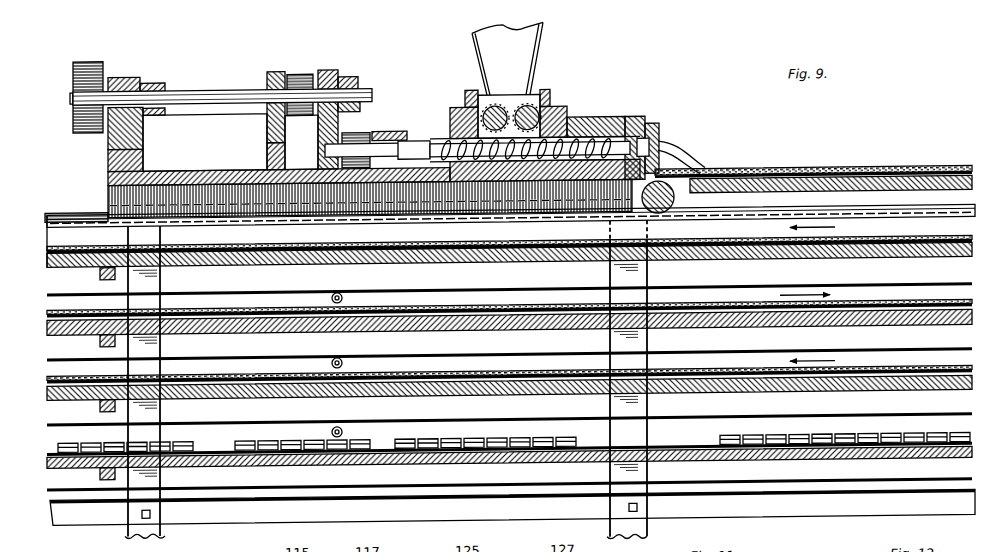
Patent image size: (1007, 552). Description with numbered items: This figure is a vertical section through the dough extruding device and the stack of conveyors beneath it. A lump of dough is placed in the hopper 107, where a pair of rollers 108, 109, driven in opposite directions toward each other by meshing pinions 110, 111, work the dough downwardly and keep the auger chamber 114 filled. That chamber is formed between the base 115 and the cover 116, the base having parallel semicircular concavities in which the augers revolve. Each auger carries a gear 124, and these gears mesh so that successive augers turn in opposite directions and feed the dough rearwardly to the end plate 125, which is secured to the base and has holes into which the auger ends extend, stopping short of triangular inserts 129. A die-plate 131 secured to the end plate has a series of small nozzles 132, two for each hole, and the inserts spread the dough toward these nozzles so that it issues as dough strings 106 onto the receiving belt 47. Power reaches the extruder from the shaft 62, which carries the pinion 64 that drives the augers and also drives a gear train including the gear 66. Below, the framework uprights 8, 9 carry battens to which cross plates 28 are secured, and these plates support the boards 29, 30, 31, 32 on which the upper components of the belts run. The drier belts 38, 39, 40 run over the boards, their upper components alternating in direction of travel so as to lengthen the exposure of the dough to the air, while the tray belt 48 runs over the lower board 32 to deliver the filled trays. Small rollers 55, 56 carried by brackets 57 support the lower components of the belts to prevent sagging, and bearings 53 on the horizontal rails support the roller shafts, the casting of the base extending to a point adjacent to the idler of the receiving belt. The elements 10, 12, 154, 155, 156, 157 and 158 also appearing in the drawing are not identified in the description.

The upright 8 is at (128, 528).
The upright 9 is at (615, 532).
The feed screw 10 is at (380, 140).
The base frame 12 is at (550, 541).
The cross plates 28 is at (98, 268).
The board 29 is at (450, 263).
The board 30 is at (447, 331).
The board 31 is at (442, 394).
The lower board 32 is at (448, 464).
The drier belt 38 is at (518, 251).
The drier belt 39 is at (540, 316).
The drier belt 40 is at (548, 392).
The receiving belt 47 is at (940, 165).
The tray belt 48 is at (524, 465).
The bearings 53 is at (670, 196).
The small roller 55 is at (358, 355).
The small roller 56 is at (358, 421).
The brackets 57 is at (356, 289).
The shaft 62 is at (213, 78).
The pinion 64 is at (300, 72).
The gear 66 is at (95, 52).
The dough strings 106 is at (845, 167).
The hopper 107 is at (541, 62).
The roller 108 is at (530, 90).
The roller 109 is at (533, 107).
The pinion 110 is at (478, 80).
The pinion 111 is at (540, 100).
The auger chamber 114 is at (598, 135).
The base 115 is at (623, 125).
The cover 116 is at (590, 118).
The gear 124 is at (356, 130).
The end plate 125 is at (656, 115).
The triangular inserts 129 is at (664, 137).
The die-plate 131 is at (660, 127).
The nozzles 132 is at (668, 146).
The base plate 154 is at (125, 202).
The housing 155 is at (143, 133).
The housing wall 156 is at (268, 122).
The gear chamber 157 is at (320, 137).
The screw gear 158 is at (378, 130).